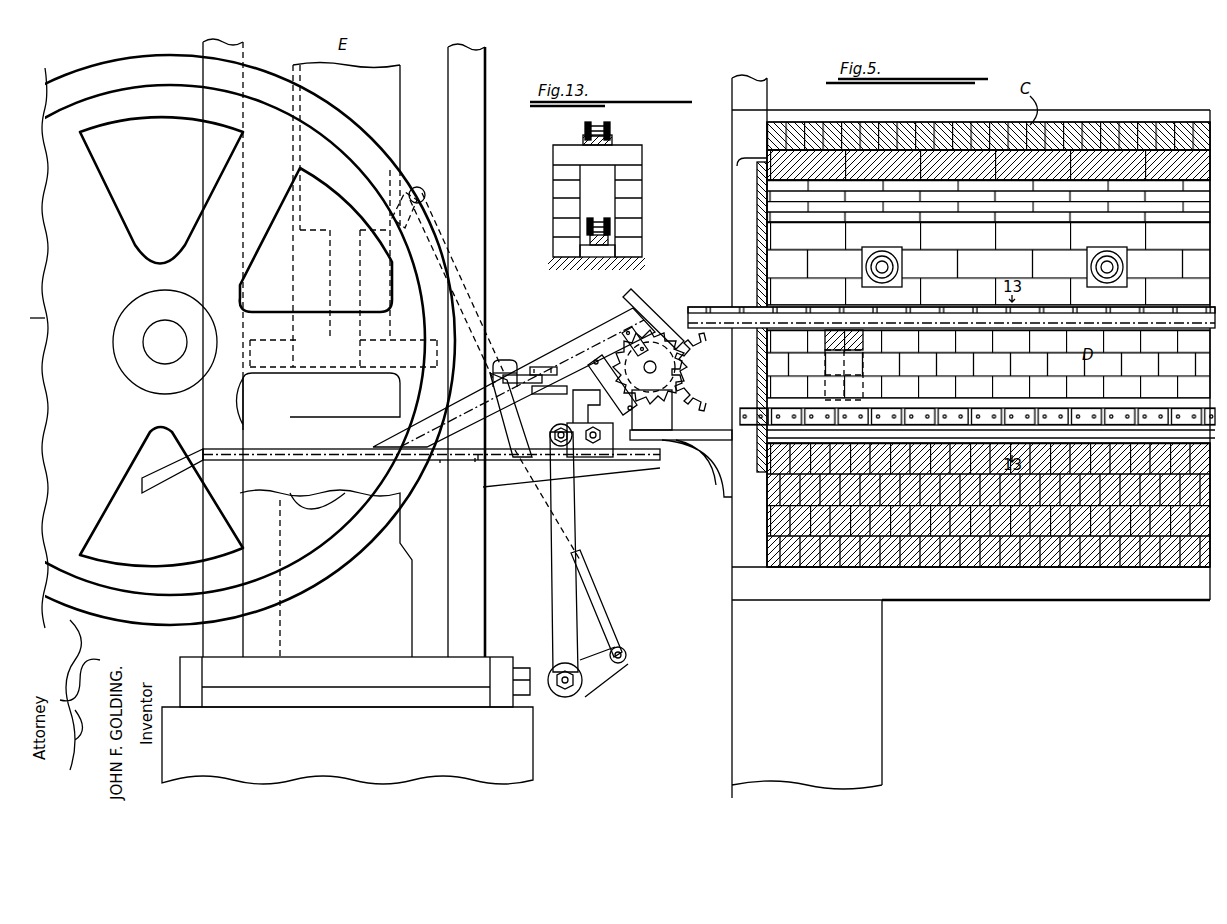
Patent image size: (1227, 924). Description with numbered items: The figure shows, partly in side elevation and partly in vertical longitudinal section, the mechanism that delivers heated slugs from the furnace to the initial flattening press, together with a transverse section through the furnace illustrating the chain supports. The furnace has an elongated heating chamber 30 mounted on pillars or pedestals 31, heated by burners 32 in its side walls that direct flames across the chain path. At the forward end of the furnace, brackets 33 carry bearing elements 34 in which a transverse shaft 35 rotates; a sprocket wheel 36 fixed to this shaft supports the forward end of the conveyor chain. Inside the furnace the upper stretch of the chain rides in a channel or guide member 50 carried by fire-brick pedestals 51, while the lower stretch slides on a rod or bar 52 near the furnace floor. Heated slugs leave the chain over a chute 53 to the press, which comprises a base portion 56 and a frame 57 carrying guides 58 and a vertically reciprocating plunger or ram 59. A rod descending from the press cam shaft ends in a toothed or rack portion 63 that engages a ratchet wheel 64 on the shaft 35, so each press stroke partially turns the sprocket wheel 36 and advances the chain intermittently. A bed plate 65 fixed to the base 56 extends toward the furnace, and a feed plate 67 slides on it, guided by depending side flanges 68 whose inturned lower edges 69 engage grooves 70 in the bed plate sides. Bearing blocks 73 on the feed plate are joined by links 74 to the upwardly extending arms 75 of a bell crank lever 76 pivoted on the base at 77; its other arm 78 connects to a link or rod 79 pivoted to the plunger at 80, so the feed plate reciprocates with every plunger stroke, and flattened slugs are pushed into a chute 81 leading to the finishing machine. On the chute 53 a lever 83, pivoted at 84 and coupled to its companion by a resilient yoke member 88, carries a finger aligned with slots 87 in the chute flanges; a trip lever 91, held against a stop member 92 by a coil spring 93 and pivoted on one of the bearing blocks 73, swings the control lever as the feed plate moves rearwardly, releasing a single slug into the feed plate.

In FIG. 5, the heating chamber 30 is at (976, 344).
In FIG. 5, the pillars or pedestals 31 is at (867, 672).
In FIG. 5, the burners 32 is at (900, 266).
In FIG. 5, the brackets 33 is at (697, 468).
In FIG. 5, the bearing elements 34 is at (660, 397).
In FIG. 5, the shaft 35 is at (656, 370).
In FIG. 5, the sprocket wheel 36 is at (700, 356).
In FIG. 5, the channel or guide member 50 is at (968, 317).
In FIG. 13, the channel or guide member 50 is at (612, 135).
In FIG. 5, the pedestals 51 is at (858, 355).
In FIG. 13, the pedestals 51 is at (615, 207).
In FIG. 5, the rod or bar 52 is at (973, 413).
In FIG. 13, the rod or bar 52 is at (610, 238).
In FIG. 5, the chute 53 is at (575, 342).
In FIG. 5, the base portion 56 is at (347, 720).
In FIG. 5, the frame 57 is at (326, 573).
In FIG. 5, the guides 58 is at (373, 110).
In FIG. 5, the plunger or ram 59 is at (338, 360).
In FIG. 5, the toothed or rack portion 63 is at (640, 297).
In FIG. 5, the ratchet wheel 64 is at (650, 367).
In FIG. 5, the bed plate 65 is at (330, 461).
In FIG. 5, the feed plate 67 is at (478, 455).
In FIG. 5, the side flanges 68 is at (475, 460).
In FIG. 5, the inturned lower edges 69 is at (440, 462).
In FIG. 5, the grooves 70 is at (312, 448).
In FIG. 5, the bearing blocks 73 is at (585, 408).
In FIG. 5, the links 74 is at (592, 445).
In FIG. 5, the upwardly extending arms 75 is at (557, 586).
In FIG. 5, the bell crank lever 76 is at (580, 695).
In FIG. 5, the pivot 77 is at (565, 690).
In FIG. 5, the arm 78 is at (598, 670).
In FIG. 5, the link or rod 79 is at (598, 608).
In FIG. 5, the pivot connection 80 is at (420, 187).
In FIG. 5, the chute 81 is at (168, 475).
In FIG. 5, the lever 83 is at (517, 375).
In FIG. 5, the pivot 84 is at (540, 367).
In FIG. 5, the slots 87 is at (505, 362).
In FIG. 5, the resilient yoke member 88 is at (493, 360).
In FIG. 5, the trip lever 91 is at (520, 400).
In FIG. 5, the stop member 92 is at (590, 395).
In FIG. 5, the coil spring 93 is at (567, 425).